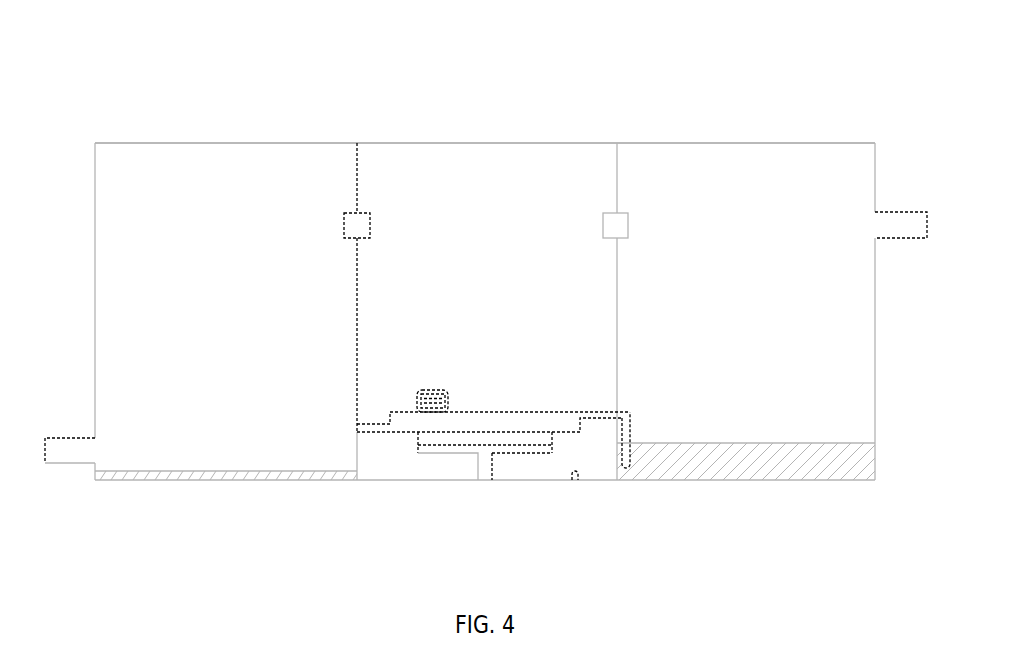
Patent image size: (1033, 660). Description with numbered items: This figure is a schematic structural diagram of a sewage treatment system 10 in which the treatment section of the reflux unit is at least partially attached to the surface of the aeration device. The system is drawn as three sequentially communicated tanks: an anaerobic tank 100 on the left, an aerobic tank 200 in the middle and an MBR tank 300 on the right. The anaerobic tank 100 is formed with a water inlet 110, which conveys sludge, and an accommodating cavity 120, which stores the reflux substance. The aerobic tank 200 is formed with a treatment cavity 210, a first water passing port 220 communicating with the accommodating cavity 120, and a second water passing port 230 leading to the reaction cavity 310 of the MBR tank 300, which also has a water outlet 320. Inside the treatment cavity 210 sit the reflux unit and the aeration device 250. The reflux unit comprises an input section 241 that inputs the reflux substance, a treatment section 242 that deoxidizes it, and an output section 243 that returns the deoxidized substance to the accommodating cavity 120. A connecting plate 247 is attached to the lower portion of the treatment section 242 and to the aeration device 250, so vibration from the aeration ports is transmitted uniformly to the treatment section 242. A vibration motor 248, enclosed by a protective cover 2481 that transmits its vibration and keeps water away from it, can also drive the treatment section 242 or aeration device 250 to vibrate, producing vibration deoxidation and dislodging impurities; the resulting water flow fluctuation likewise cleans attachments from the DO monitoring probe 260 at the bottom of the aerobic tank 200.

The sewage treatment system 10 is at (522, 36).
The anaerobic tank 100 is at (231, 143).
The water inlet 110 is at (42, 446).
The accommodating cavity 120 is at (162, 442).
The aerobic tank 200 is at (469, 143).
The treatment cavity 210 is at (543, 204).
The first water passing port 220 is at (357, 229).
The second water passing port 230 is at (615, 229).
The input section 241 is at (626, 412).
The treatment section 242 is at (568, 416).
The output section 243 is at (362, 416).
The connecting plate 247 is at (531, 445).
The vibration motor 248 is at (430, 390).
The protective cover 2481 is at (445, 392).
The aeration device 250 is at (486, 462).
The DO monitoring probe 260 is at (578, 482).
The MBR tank 300 is at (772, 143).
The reaction cavity 310 is at (803, 229).
The water outlet 320 is at (930, 222).